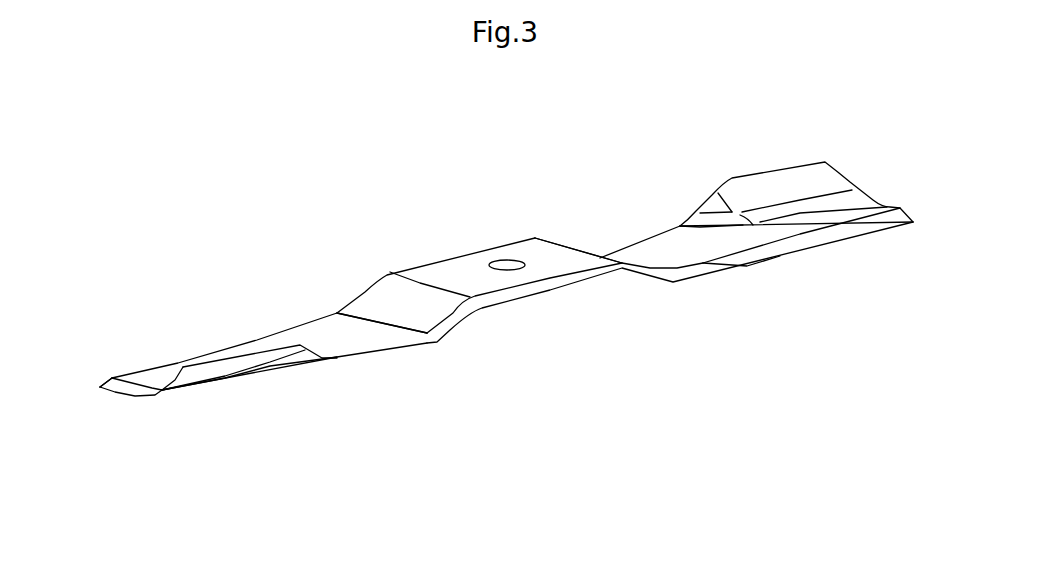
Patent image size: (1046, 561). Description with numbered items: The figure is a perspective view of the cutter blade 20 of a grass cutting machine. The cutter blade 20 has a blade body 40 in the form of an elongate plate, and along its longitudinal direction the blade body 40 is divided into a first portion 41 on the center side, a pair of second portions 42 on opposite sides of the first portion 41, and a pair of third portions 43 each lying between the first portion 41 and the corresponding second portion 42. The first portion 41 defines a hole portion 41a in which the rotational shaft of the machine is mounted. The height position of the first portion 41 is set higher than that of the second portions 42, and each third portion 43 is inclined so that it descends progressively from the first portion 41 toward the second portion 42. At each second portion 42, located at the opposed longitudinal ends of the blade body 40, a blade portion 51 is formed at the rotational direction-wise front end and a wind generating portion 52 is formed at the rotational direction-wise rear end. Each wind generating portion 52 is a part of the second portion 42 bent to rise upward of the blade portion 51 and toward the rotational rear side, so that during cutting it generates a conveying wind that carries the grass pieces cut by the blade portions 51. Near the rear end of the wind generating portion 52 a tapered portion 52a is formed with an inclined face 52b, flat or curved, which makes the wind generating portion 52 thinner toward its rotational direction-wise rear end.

The cutter blade 20 is at (255, 172).
The blade body 40 is at (440, 260).
The first portion 41 is at (626, 270).
The hole portion 41a is at (510, 262).
The second portion 42 is at (100, 392).
The third portion 43 is at (432, 350).
The blade portion 51 is at (100, 385).
The wind generating portion 52 is at (303, 344).
The tapered portion 52a is at (180, 362).
The inclined face 52b is at (240, 360).